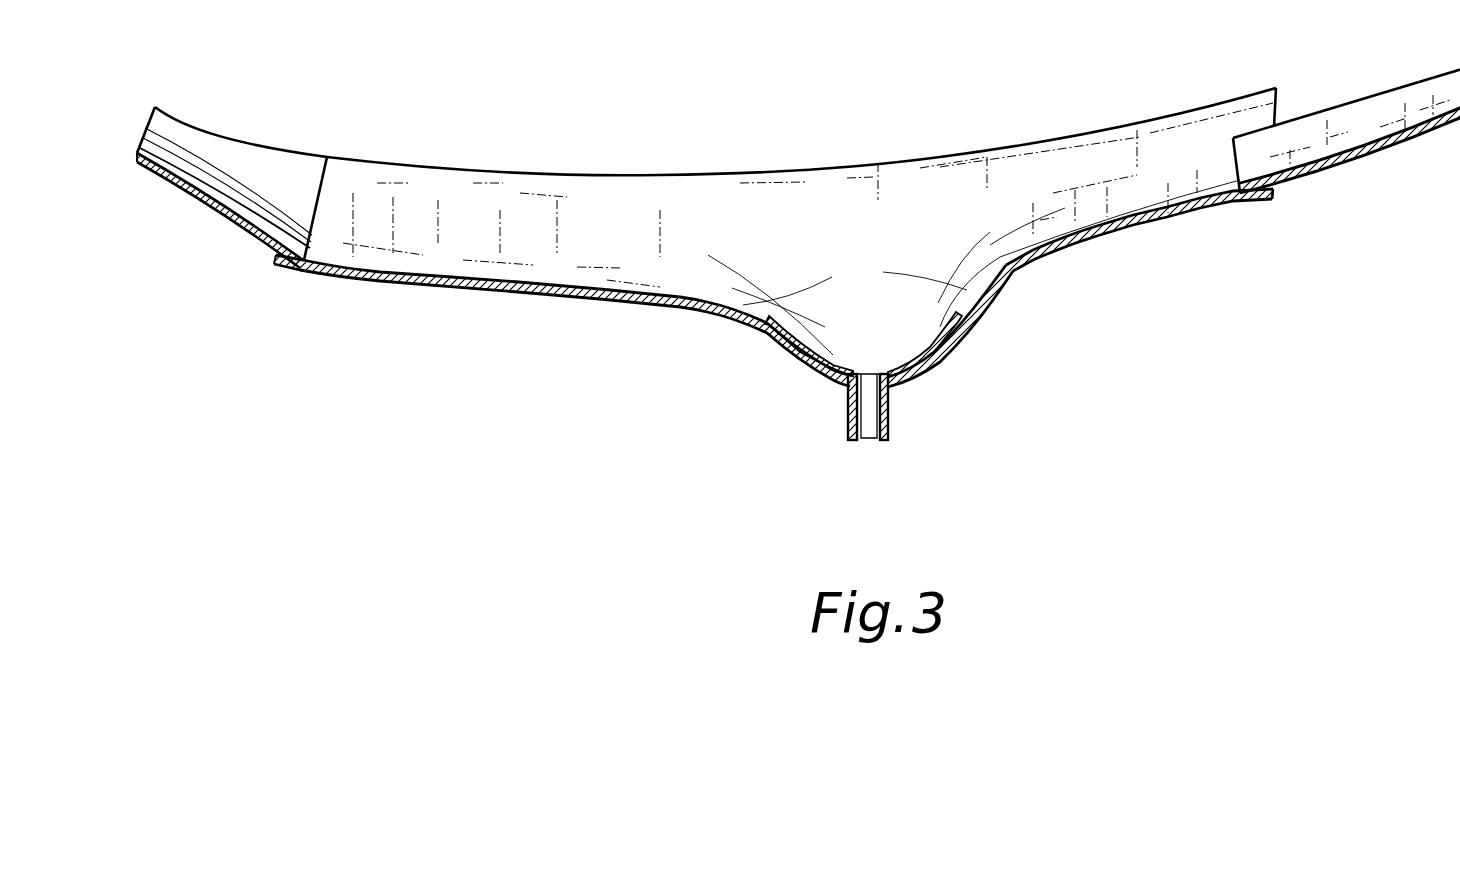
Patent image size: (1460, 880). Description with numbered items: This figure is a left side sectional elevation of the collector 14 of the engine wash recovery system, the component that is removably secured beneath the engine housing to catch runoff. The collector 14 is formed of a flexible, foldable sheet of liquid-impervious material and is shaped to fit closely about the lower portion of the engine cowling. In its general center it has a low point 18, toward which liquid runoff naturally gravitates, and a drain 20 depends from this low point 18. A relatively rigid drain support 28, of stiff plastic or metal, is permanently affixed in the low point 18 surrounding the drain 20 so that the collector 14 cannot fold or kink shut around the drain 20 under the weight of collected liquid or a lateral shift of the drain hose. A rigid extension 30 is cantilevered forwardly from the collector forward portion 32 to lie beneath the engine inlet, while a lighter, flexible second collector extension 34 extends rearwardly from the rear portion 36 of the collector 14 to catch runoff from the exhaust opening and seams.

The collector 14 is at (752, 473).
The low point 18 is at (767, 345).
The drain 20 is at (893, 427).
The drain support 28 is at (917, 350).
The rigid extension 30 is at (240, 238).
The collector forward portion 32 is at (311, 266).
The second collector extension 34 is at (1375, 94).
The rear portion 36 is at (1278, 110).